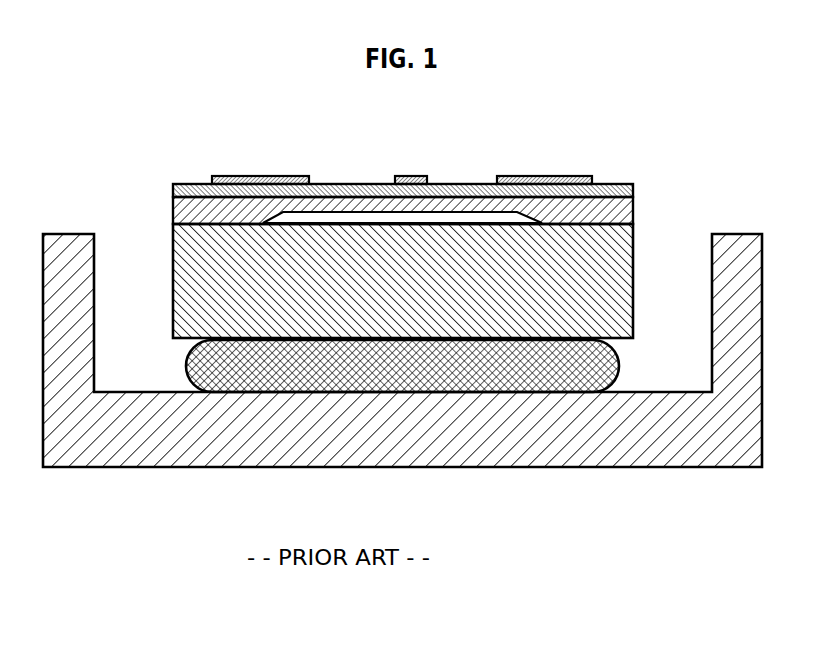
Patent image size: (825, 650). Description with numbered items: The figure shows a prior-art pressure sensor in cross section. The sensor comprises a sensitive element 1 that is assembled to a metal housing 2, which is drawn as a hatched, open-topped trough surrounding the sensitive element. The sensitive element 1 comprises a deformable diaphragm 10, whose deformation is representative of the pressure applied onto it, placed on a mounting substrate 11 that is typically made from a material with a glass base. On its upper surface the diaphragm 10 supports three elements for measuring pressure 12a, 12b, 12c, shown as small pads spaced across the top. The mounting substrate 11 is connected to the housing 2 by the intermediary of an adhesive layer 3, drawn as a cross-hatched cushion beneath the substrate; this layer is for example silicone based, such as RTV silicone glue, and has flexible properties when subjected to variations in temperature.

The sensitive element 1 is at (399, 230).
The metal housing 2 is at (738, 313).
The adhesive layer 3 is at (203, 361).
The deformable diaphragm 10 is at (611, 209).
The mounting substrate 11 is at (196, 280).
The element for measuring pressure 12a is at (268, 178).
The element for measuring pressure 12b is at (411, 178).
The element for measuring pressure 12c is at (552, 178).